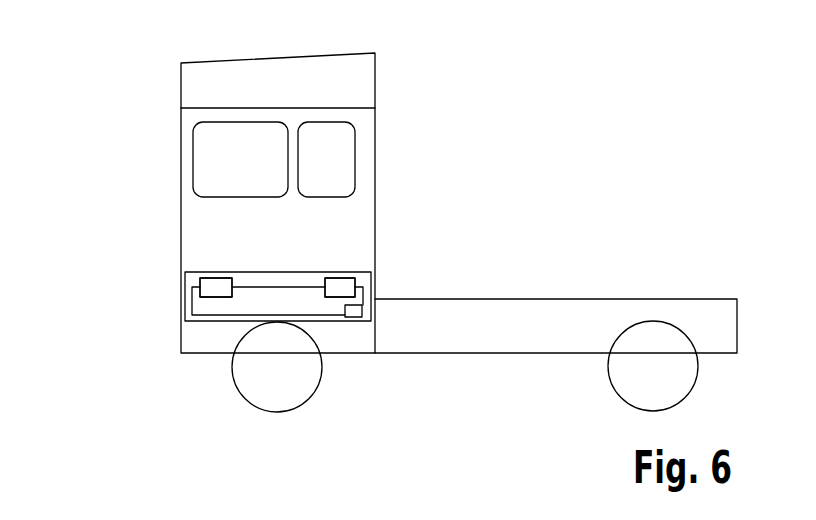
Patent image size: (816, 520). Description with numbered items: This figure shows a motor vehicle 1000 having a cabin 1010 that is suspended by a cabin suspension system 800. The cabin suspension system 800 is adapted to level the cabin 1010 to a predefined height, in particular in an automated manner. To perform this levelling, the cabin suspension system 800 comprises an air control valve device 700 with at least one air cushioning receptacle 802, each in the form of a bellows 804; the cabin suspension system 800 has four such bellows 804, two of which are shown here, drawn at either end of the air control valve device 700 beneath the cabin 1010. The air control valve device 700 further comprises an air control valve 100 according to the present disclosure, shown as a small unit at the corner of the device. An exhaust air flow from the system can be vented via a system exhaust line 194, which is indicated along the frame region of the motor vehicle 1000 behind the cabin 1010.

The motor vehicle 1000 is at (607, 108).
The cabin 1010 is at (367, 133).
The system exhaust line 194 is at (384, 312).
The cabin suspension system 800 is at (197, 324).
The air control valve device 700 is at (217, 317).
The air cushioning receptacle 802 is at (217, 283).
The bellows 804 is at (340, 285).
The air control valve 100 is at (352, 318).